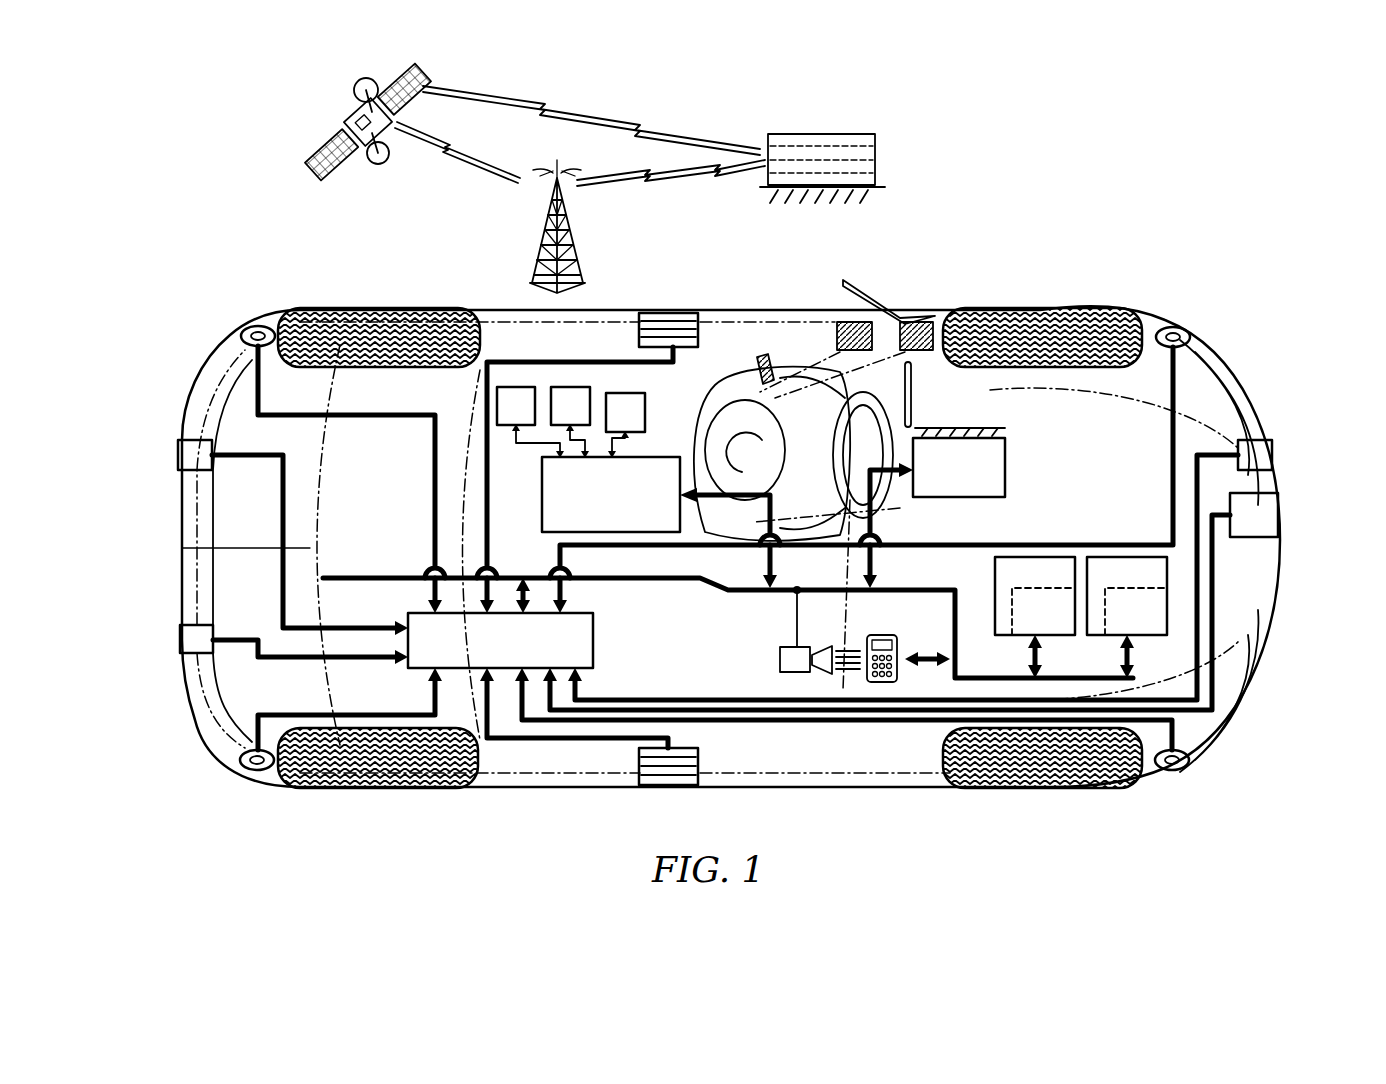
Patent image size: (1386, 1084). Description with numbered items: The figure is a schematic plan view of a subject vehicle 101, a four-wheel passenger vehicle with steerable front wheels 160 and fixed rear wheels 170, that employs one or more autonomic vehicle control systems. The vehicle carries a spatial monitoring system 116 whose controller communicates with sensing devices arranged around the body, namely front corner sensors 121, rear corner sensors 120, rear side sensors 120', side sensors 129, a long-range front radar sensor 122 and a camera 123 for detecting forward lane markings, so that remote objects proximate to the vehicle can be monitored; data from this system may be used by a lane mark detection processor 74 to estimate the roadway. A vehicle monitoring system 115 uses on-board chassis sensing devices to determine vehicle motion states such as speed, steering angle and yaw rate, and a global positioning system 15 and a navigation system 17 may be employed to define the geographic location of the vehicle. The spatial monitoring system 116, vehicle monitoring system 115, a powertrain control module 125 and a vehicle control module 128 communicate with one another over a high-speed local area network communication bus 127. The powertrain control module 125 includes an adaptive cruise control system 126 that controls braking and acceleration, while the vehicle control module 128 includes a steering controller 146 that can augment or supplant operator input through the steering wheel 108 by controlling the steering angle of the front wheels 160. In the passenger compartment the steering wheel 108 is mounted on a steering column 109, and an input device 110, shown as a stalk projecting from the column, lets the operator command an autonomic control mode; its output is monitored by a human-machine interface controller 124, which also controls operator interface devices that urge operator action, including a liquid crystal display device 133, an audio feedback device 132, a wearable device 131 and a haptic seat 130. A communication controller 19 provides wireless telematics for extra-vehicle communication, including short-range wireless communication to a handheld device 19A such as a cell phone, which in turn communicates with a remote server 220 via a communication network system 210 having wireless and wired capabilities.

The global positioning system 15 is at (506, 416).
The navigation system 17 is at (560, 416).
The communication controller 19 is at (787, 648).
The handheld device 19A is at (897, 680).
The lane mark detection processor 74 is at (615, 422).
The subject vehicle 101 is at (1028, 290).
The steering wheel 108 is at (892, 495).
The steering column 109 is at (945, 430).
The input device 110 is at (911, 400).
The vehicle monitoring system 115 is at (595, 506).
The spatial monitoring system 116 is at (484, 651).
The rear corner sensors 120 is at (243, 547).
The rear side sensors 120' is at (171, 561).
The front corner sensors 121 is at (1175, 327).
The front radar sensor 122 is at (1268, 514).
The camera 123 is at (1258, 457).
The human-machine interface controller 124 is at (943, 477).
The powertrain control module 125 is at (1019, 585).
The adaptive cruise control system 126 is at (1027, 624).
The communication bus 127 is at (637, 583).
The vehicle control module 128 is at (1111, 585).
The side sensors 129 is at (672, 313).
The haptic seat 130 is at (703, 360).
The wearable device 131 is at (766, 355).
The audio feedback device 132 is at (848, 322).
The liquid crystal display device 133 is at (915, 322).
The steering controller 146 is at (1120, 624).
The front wheels 160 is at (1090, 308).
The rear wheels 170 is at (318, 308).
The communication network system 210 is at (470, 209).
The remote server 220 is at (882, 150).